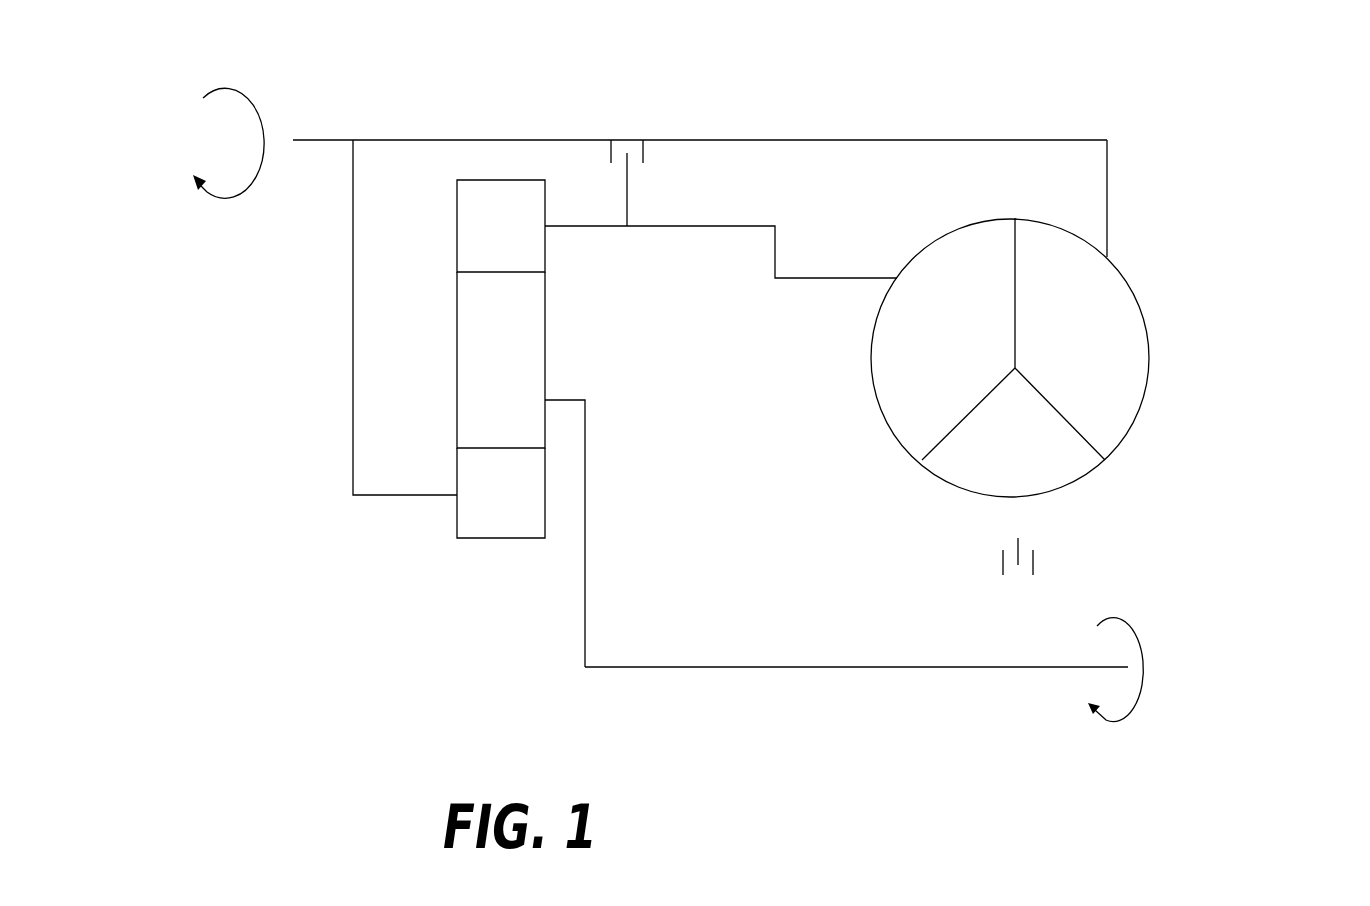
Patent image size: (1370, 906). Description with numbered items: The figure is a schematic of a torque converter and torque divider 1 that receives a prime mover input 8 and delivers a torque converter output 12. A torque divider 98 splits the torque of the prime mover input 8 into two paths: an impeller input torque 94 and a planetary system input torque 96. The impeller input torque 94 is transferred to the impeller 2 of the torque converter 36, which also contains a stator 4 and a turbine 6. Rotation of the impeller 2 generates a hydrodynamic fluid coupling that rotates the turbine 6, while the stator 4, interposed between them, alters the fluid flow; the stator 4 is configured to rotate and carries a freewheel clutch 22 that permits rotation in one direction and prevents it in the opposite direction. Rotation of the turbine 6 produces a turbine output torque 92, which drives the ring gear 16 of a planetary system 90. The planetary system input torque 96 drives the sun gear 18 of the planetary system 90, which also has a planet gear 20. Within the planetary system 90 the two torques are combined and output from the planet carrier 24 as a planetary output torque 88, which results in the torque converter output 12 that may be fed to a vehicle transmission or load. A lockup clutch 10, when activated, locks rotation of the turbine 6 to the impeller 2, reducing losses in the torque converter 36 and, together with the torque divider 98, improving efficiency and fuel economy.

The torque converter and torque divider 1 is at (1112, 105).
The impeller 2 is at (1125, 348).
The stator 4 is at (1075, 467).
The turbine 6 is at (890, 376).
The prime mover input 8 is at (238, 143).
The lockup clutch 10 is at (661, 188).
The torque converter output 12 is at (1202, 670).
The ring gear 16 is at (486, 258).
The sun gear 18 is at (486, 521).
The planet gear 20 is at (466, 380).
The freewheel clutch 22 is at (1007, 592).
The planet carrier 24 is at (501, 360).
The torque converter 36 is at (1154, 281).
The planetary output torque 88 is at (680, 667).
The planetary system 90 is at (571, 363).
The turbine output torque 92 is at (707, 226).
The impeller input torque 94 is at (1107, 192).
The planetary system input torque 96 is at (390, 495).
The torque divider 98 is at (492, 117).